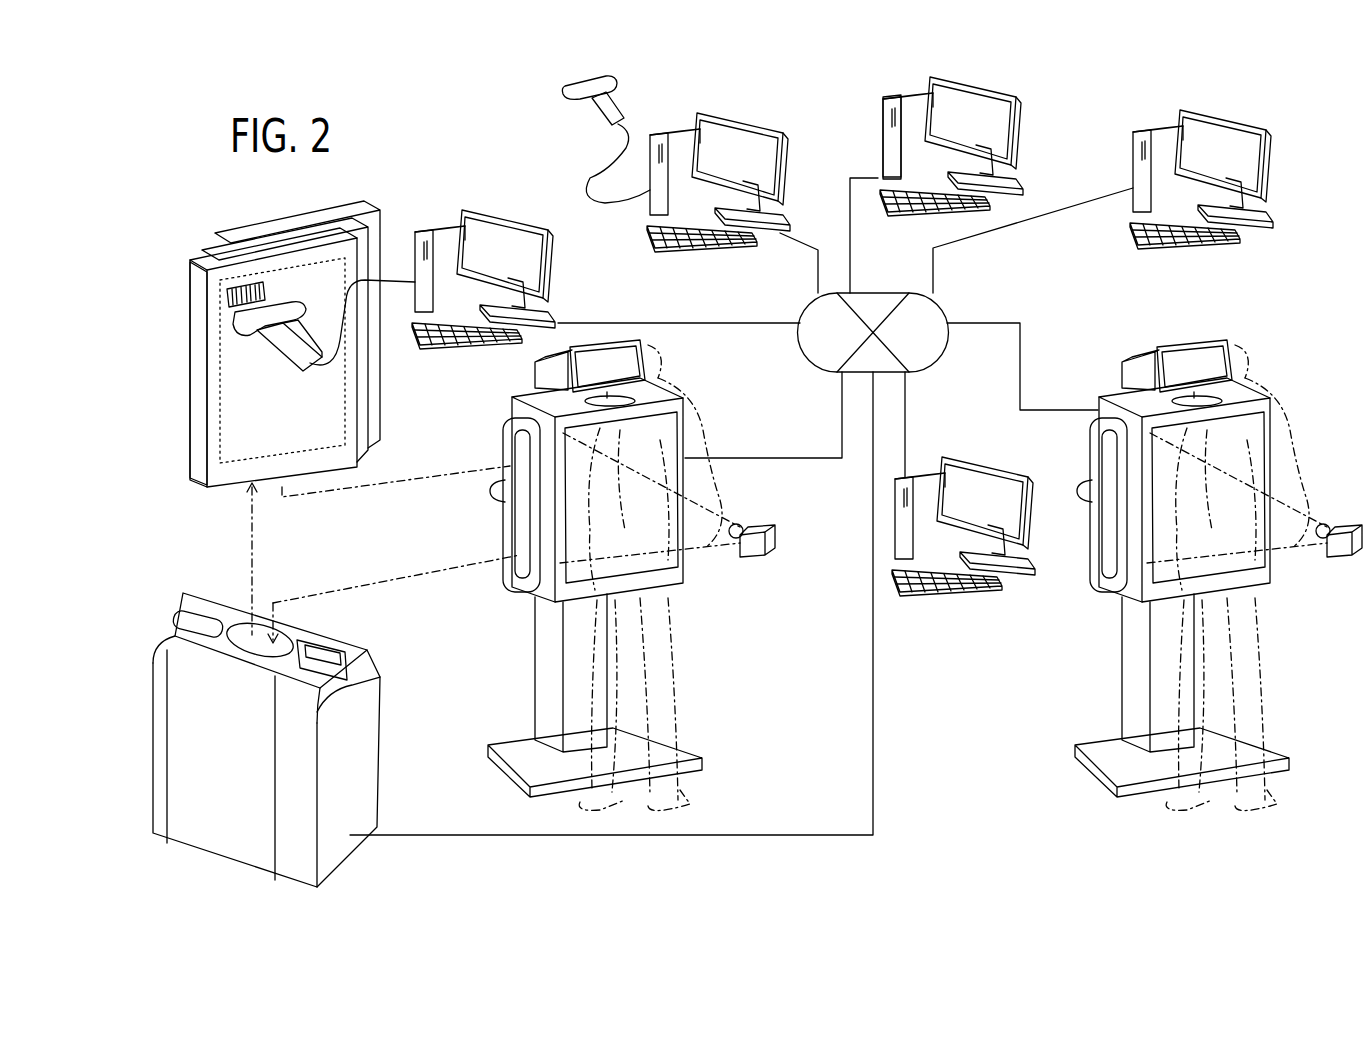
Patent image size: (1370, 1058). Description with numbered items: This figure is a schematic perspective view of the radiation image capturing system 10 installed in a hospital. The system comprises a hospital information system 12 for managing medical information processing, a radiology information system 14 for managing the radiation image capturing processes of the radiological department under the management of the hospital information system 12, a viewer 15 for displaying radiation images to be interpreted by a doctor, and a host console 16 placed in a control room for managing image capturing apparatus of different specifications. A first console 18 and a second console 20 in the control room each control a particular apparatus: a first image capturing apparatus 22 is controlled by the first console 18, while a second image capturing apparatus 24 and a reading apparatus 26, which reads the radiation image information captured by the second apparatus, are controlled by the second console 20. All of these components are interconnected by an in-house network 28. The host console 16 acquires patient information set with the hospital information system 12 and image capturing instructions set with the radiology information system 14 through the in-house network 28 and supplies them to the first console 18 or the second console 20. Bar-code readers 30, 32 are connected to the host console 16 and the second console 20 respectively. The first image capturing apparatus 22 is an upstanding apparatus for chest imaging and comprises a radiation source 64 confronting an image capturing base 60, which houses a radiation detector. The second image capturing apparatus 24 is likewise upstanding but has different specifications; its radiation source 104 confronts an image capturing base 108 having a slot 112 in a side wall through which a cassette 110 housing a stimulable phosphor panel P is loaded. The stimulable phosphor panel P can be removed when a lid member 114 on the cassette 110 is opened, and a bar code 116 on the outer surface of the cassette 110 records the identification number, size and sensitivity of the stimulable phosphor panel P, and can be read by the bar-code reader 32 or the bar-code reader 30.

The radiation image capturing system 10 is at (437, 131).
The hospital information system (HIS) 12 is at (882, 135).
The radiology information system (RIS) 14 is at (859, 136).
The viewer 15 is at (1157, 131).
The host console 16 is at (680, 133).
The first console 18 is at (912, 478).
The second console 20 is at (437, 232).
The first image capturing apparatus 22 is at (1282, 374).
The second image capturing apparatus 24 is at (697, 372).
The reading apparatus 26 is at (178, 706).
The in-house network 28 is at (937, 304).
The bar-code reader 30 is at (598, 118).
The bar-code reader 32 is at (237, 332).
The image capturing base 60 is at (1100, 581).
The radiation source 64 is at (1352, 557).
The radiation source 104 is at (758, 556).
The image capturing base 108 is at (580, 563).
The cassette 110 is at (200, 442).
The slot 112 is at (525, 556).
The lid member 114 is at (192, 293).
The bar code 116 is at (268, 292).
The stimulable phosphor panel P is at (328, 404).